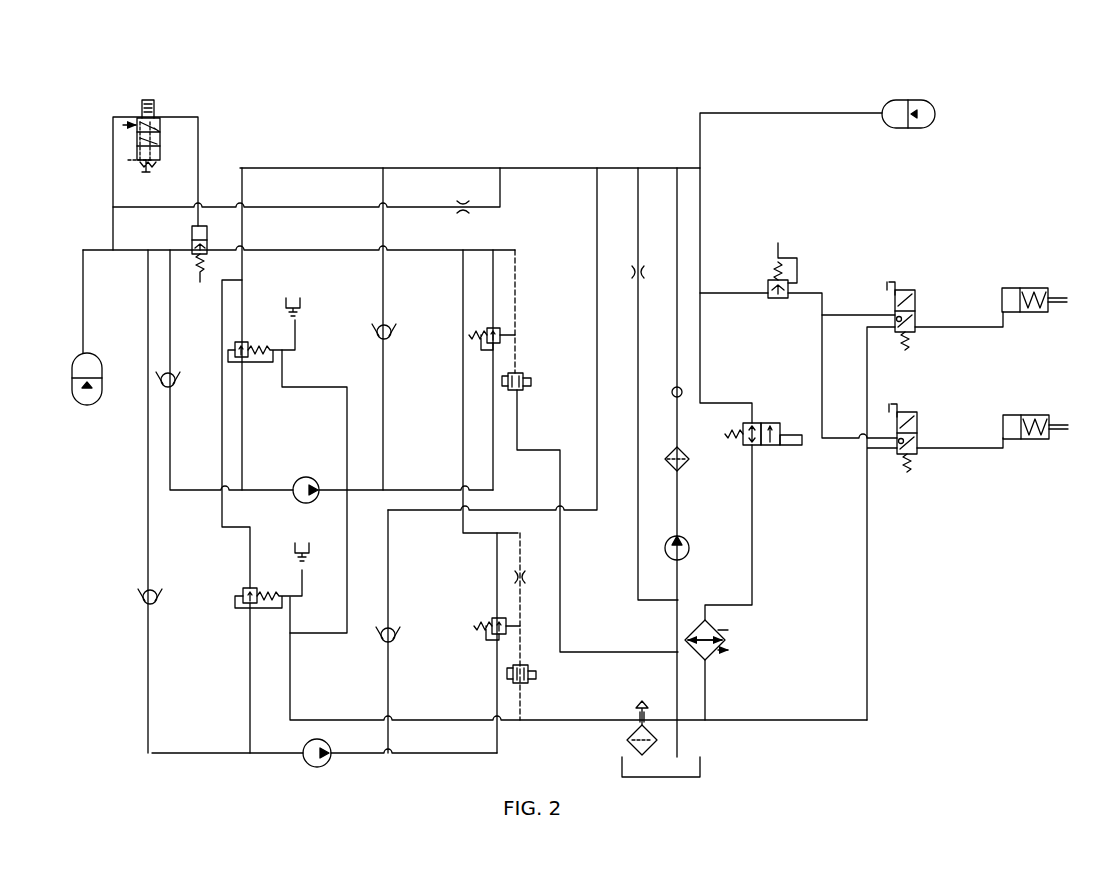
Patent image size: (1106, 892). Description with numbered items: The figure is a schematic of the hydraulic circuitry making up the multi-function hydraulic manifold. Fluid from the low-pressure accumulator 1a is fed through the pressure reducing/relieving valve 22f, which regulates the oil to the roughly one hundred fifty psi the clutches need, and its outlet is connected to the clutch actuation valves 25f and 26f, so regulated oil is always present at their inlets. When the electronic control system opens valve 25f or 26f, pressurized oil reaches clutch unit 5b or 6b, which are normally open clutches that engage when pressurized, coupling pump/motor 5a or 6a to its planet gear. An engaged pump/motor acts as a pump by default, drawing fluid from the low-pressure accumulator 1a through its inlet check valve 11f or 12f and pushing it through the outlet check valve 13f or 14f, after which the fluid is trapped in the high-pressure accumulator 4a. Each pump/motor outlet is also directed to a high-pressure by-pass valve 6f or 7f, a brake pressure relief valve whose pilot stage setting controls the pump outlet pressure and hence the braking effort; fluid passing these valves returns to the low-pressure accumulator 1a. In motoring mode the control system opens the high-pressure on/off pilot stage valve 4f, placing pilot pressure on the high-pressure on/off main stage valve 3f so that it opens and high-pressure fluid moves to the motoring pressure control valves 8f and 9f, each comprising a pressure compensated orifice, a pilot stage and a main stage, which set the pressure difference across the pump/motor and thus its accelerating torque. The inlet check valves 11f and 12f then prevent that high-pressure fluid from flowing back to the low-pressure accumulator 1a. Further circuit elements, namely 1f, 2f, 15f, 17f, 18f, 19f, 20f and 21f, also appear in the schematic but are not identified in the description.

The low-pressure accumulator 1a is at (940, 120).
The orifice 1f is at (459, 203).
The orifice 2f is at (641, 267).
The high-pressure on/off main stage valve 3f is at (216, 233).
The high-pressure on/off pilot stage valve 4f is at (170, 133).
The high-pressure accumulator 4a is at (87, 409).
The pump/motor 5a is at (321, 737).
The clutch unit 5b is at (1023, 284).
The pump/motor 6a is at (305, 476).
The clutch unit 6b is at (1026, 412).
The high-pressure by-pass valve 6f is at (304, 340).
The high-pressure by-pass valve 7f is at (239, 589).
The motoring pressure control valve 8f is at (518, 338).
The motoring pressure control valve 9f is at (534, 631).
The inlet check valve 11f is at (391, 346).
The inlet check valve 12f is at (396, 625).
The outlet check valve 13f is at (162, 590).
The outlet check valve 14f is at (175, 372).
The heat exchanger 15f is at (725, 656).
The pump 17f is at (690, 553).
The filter 18f is at (686, 467).
The tank 19f is at (708, 762).
The directional valve 20f is at (775, 452).
The check valve 21f is at (685, 389).
The pressure reducing/relieving valve 22f is at (794, 275).
The clutch actuation valve 25f is at (920, 313).
The clutch actuation valve 26f is at (921, 421).